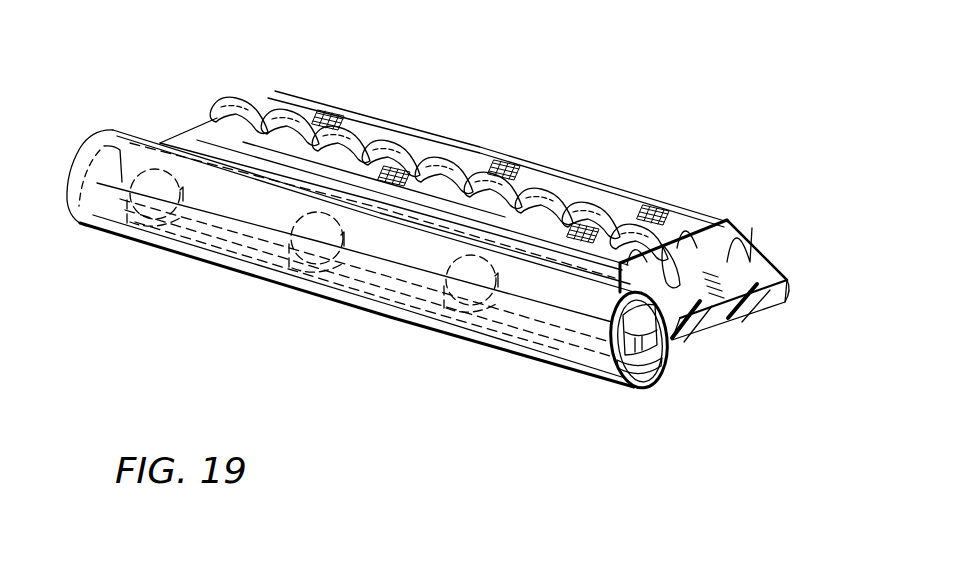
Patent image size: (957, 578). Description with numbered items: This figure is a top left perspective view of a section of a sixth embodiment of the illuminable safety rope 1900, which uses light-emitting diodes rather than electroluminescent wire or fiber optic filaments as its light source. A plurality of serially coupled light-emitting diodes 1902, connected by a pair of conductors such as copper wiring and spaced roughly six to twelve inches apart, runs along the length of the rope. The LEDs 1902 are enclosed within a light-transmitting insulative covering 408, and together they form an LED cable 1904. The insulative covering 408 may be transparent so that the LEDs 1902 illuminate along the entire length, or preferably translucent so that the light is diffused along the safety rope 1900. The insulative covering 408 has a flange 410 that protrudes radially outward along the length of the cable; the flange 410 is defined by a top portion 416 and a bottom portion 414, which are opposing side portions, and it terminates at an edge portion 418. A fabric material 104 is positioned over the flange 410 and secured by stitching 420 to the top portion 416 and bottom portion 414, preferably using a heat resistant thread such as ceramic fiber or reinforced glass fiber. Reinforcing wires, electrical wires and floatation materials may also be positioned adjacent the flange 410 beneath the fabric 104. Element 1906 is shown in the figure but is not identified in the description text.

The fabric material 104 is at (557, 172).
The insulative covering 408 is at (133, 137).
The flange 410 is at (792, 297).
The bottom portion 414 is at (736, 322).
The top portion 416 is at (752, 290).
The edge portion 418 is at (791, 282).
The stitching 420 is at (266, 113).
The illuminable safety rope 1900 is at (107, 347).
The light-emitting diodes 1902 is at (293, 275).
The LED cable 1904 is at (673, 397).
The hidden lines 1906 is at (520, 357).